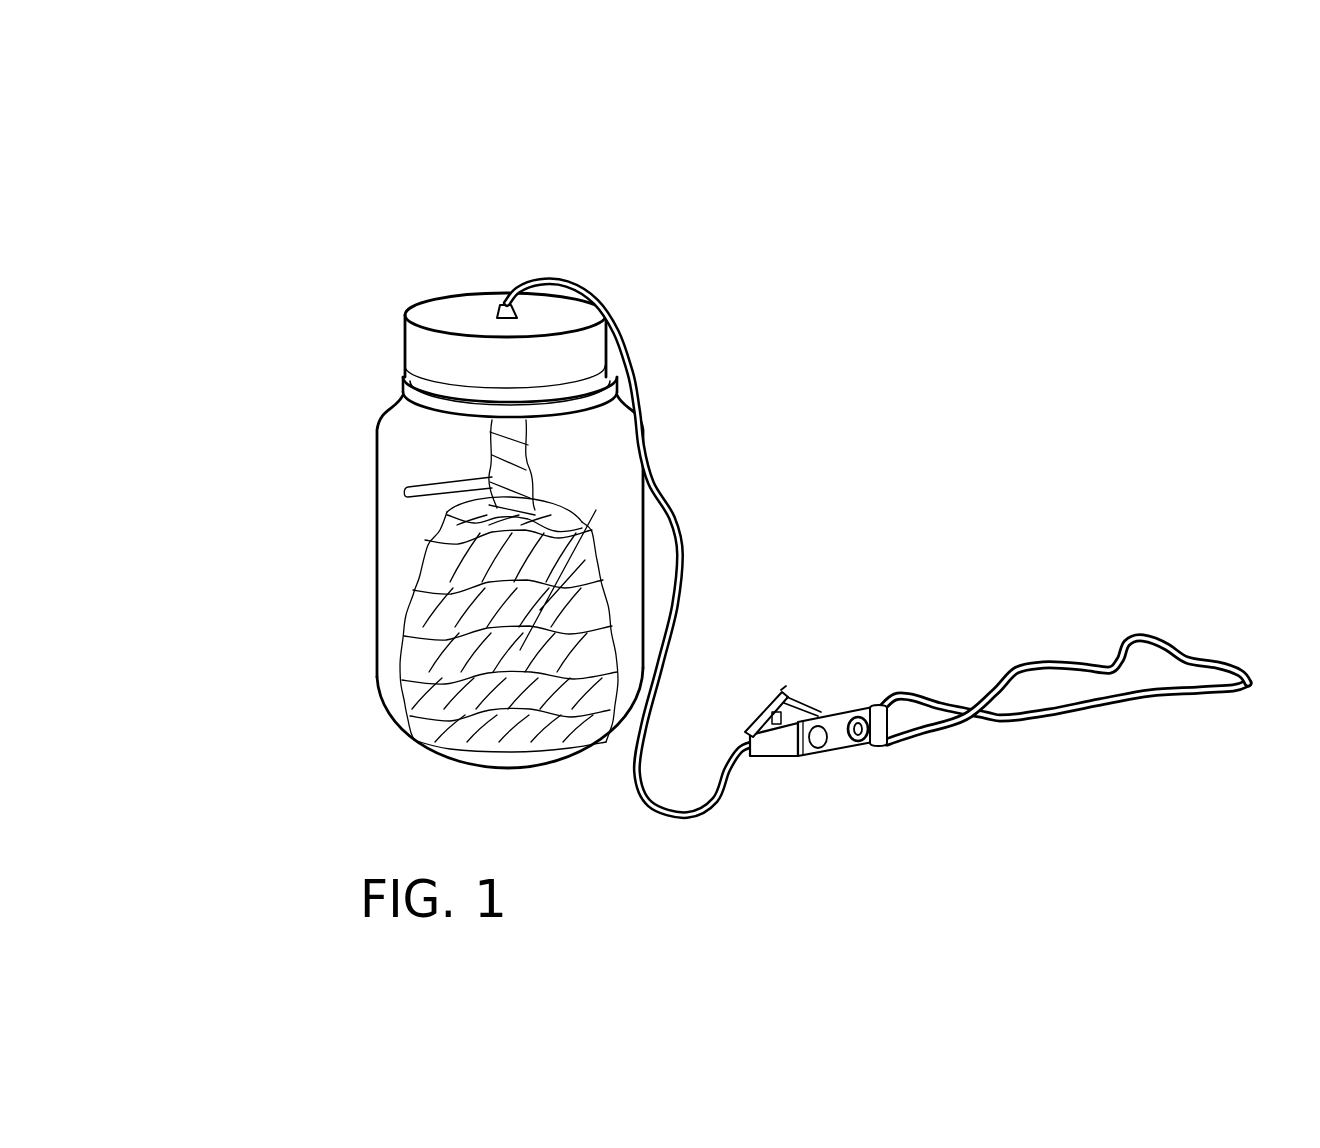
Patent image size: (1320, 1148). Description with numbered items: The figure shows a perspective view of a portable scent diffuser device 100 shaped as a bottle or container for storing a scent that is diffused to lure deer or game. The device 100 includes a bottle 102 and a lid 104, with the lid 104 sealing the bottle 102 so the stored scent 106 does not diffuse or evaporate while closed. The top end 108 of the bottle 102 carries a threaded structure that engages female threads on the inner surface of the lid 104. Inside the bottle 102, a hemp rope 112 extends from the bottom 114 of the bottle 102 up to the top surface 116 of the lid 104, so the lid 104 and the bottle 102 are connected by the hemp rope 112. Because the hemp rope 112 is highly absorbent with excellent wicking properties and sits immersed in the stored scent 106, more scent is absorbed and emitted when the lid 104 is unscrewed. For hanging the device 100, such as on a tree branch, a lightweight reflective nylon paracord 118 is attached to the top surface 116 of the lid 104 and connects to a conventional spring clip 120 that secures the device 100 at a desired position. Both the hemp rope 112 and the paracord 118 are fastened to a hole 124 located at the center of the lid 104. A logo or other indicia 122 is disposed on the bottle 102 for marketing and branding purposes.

The portable scent diffuser device 100 is at (741, 213).
The bottle 102 is at (380, 675).
The lid 104 is at (437, 338).
The stored scent 106 is at (467, 713).
The top end 108 is at (403, 400).
The hemp rope 112 is at (515, 428).
The bottom 114 is at (583, 753).
The top surface 116 is at (458, 310).
The nylon paracord 118 is at (640, 437).
The spring clip 120 is at (790, 753).
The logo or indicia 122 is at (393, 560).
The hole 124 is at (505, 295).